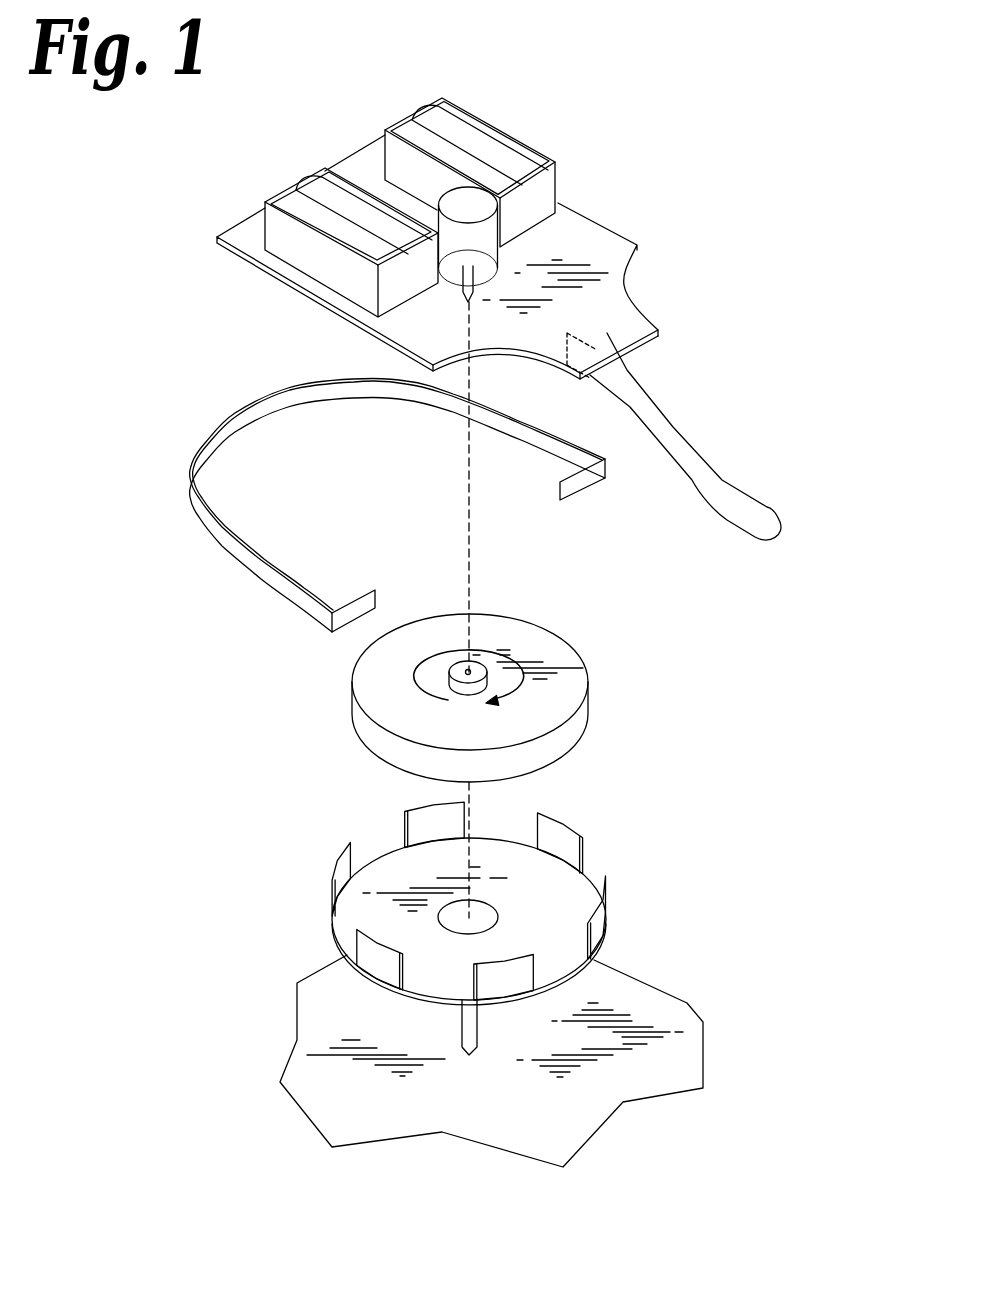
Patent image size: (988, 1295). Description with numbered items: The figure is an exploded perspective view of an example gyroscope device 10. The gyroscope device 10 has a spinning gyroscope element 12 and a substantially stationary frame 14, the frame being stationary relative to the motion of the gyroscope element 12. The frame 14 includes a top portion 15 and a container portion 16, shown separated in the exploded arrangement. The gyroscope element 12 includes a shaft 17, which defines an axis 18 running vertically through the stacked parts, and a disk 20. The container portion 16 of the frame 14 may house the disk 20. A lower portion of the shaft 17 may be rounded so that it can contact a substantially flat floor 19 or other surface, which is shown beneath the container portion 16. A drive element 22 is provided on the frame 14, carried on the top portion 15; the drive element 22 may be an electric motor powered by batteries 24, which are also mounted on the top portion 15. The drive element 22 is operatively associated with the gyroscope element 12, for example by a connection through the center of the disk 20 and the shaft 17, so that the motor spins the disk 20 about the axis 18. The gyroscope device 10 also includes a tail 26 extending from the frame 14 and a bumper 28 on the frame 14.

The gyroscope device 10 is at (714, 112).
The gyroscope element 12 is at (607, 650).
The frame 14 is at (659, 280).
The top portion 15 is at (350, 155).
The container portion 16 is at (337, 878).
The shaft 17 is at (460, 1032).
The axis 18 is at (463, 525).
The floor 19 is at (680, 1003).
The disk 20 is at (348, 683).
The drive element 22 is at (443, 190).
The batteries 24 is at (413, 115).
The tail 26 is at (680, 427).
The bumper 28 is at (258, 393).